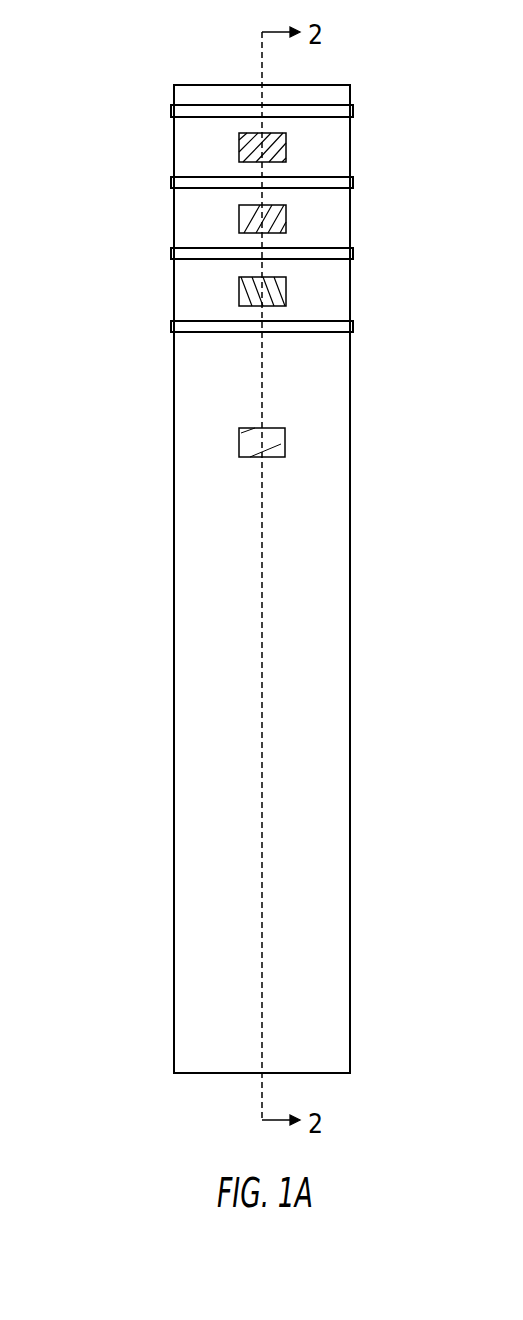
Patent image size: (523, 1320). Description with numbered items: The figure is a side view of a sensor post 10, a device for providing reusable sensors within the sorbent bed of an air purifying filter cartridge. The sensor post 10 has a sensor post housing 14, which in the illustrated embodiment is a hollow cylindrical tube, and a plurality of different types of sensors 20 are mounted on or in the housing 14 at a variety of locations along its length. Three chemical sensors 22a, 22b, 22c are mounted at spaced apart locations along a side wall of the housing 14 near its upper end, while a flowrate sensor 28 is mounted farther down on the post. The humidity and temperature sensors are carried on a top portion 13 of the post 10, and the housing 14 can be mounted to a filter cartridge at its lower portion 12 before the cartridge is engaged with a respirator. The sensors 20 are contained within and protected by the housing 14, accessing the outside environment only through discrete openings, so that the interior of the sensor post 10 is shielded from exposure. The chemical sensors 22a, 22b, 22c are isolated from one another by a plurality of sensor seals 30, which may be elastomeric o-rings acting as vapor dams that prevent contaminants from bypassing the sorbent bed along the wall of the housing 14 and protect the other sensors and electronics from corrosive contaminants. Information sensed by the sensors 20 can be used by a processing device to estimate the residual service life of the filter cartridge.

The sensor post 10 is at (236, 549).
The lower portion 12 is at (349, 1050).
The top portion 13 is at (220, 84).
The sensor post housing 14 is at (287, 617).
The sensors 20 is at (344, 283).
The first chemical sensor 22a is at (286, 153).
The second chemical sensor 22b is at (286, 227).
The third chemical sensor 22c is at (286, 298).
The flowrate sensor 28 is at (285, 445).
The sensor seals 30 is at (171, 112).